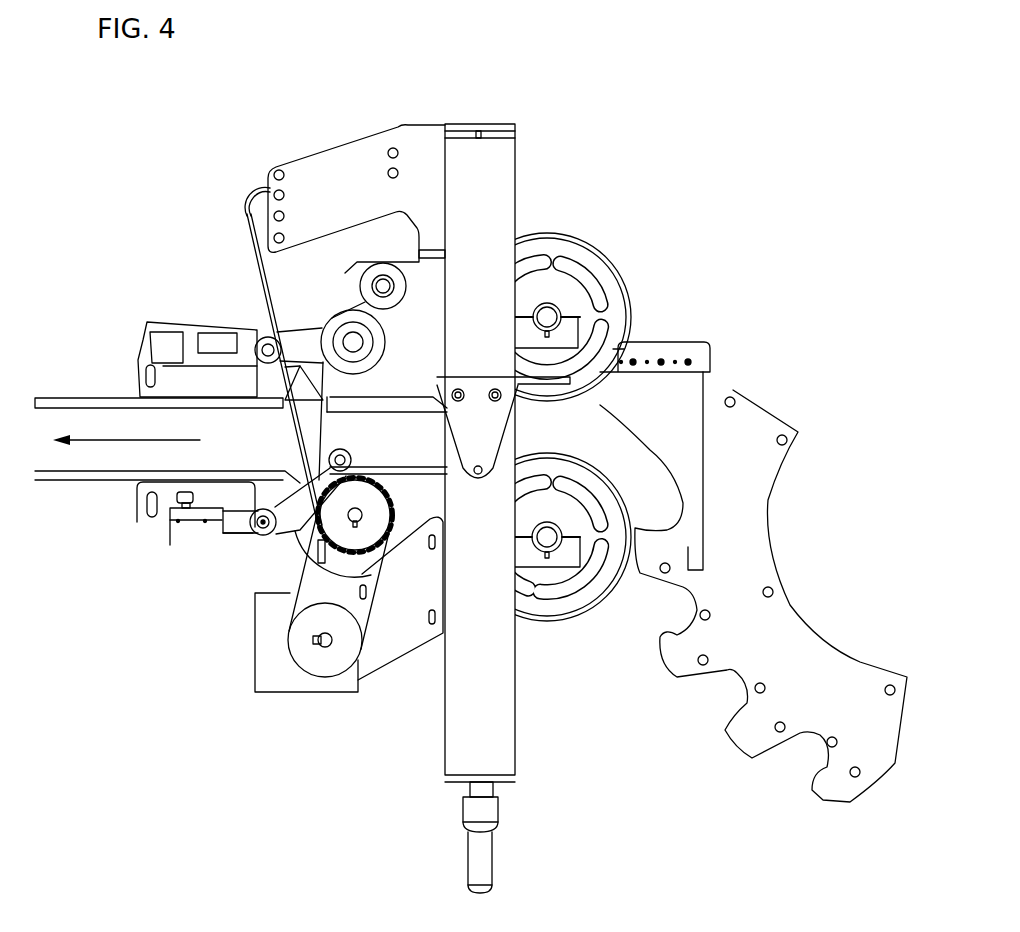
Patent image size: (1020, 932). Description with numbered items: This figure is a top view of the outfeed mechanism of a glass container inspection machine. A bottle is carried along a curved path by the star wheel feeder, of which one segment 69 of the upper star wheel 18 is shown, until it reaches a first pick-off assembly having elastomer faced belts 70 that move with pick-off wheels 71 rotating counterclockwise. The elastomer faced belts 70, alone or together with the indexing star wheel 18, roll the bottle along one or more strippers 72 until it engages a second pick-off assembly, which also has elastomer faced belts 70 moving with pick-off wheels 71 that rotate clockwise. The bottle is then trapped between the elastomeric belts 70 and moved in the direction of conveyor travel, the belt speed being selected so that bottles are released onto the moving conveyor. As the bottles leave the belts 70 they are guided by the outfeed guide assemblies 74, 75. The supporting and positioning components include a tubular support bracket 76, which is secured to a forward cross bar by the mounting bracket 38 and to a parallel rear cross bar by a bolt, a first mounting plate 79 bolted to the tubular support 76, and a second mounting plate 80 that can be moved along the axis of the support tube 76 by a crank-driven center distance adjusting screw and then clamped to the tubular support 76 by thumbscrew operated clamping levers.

The upper star wheel 18 is at (748, 565).
The mounting bracket 38 is at (471, 376).
The segment of the upper star wheel 69 is at (737, 498).
The elastomer faced belt 70 is at (632, 312).
The pick-off wheel 71 is at (548, 252).
The stripper 72 is at (683, 422).
The outfeed guide assembly 74 is at (183, 562).
The outfeed guide assembly 75 is at (112, 383).
The tubular support bracket 76 is at (447, 742).
The first mounting plate 79 is at (527, 557).
The second mounting plate 80 is at (558, 298).